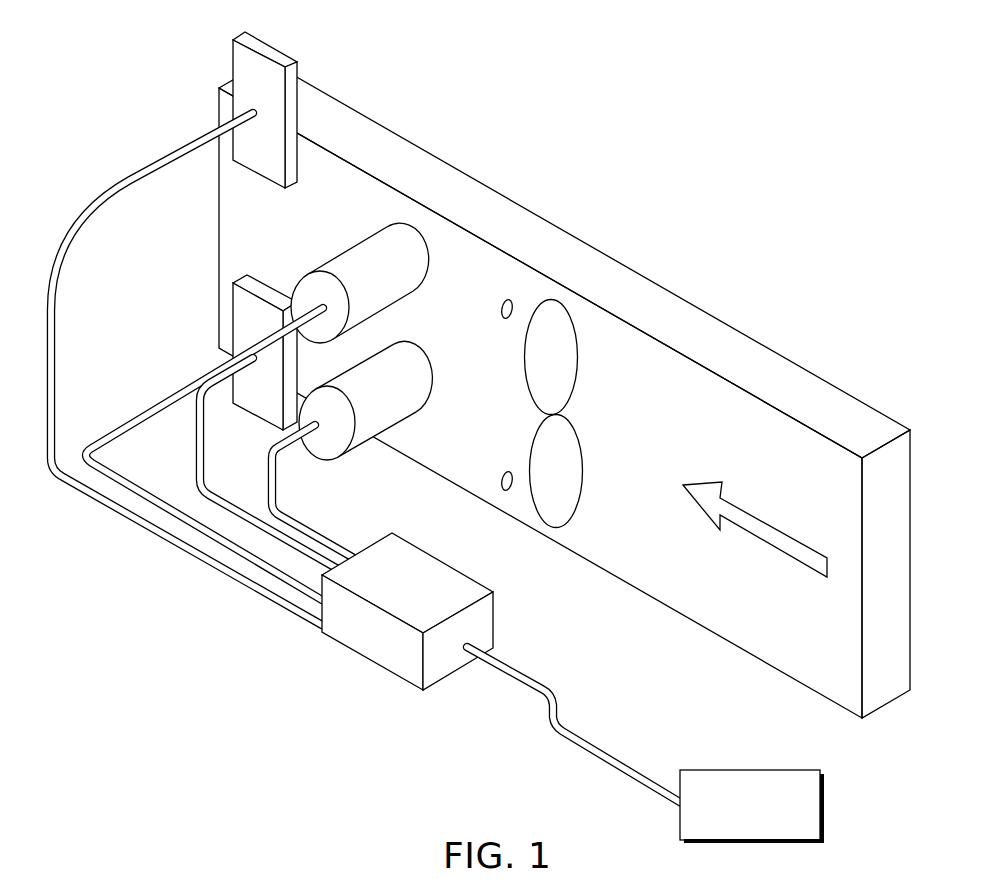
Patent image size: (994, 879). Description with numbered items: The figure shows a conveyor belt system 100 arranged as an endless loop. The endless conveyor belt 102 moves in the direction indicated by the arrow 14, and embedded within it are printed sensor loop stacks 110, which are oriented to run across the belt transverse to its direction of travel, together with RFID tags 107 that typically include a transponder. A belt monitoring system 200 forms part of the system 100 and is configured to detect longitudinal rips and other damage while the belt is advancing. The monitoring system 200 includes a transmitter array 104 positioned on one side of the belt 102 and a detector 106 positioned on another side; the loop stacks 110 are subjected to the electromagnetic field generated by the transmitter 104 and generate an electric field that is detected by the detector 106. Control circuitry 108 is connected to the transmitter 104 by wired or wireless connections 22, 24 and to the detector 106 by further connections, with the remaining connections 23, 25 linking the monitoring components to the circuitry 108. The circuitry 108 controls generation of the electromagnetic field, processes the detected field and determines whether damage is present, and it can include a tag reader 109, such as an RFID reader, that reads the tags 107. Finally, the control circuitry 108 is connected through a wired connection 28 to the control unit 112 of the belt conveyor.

The conveyor belt system 100 is at (686, 134).
The conveyor belt 102 is at (617, 268).
The transmitter array 104 is at (302, 273).
The detector 106 is at (420, 368).
The tags 107 is at (512, 300).
The control circuitry 108 is at (370, 652).
The tag reader 109 is at (272, 46).
The printed sensor loop stacks 110 is at (578, 372).
The control unit 112 is at (823, 805).
The direction of belt movement 14 is at (777, 527).
The wired/wireless connection 22 is at (192, 433).
The wired/wireless connection 23 is at (117, 503).
The wired/wireless connection 24 is at (278, 483).
The wired/wireless connection 25 is at (178, 518).
The wired connection 28 is at (547, 727).
The belt monitoring system 200 is at (112, 878).